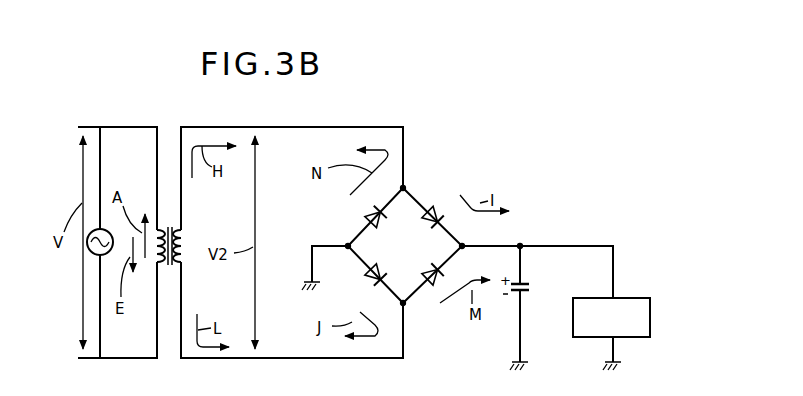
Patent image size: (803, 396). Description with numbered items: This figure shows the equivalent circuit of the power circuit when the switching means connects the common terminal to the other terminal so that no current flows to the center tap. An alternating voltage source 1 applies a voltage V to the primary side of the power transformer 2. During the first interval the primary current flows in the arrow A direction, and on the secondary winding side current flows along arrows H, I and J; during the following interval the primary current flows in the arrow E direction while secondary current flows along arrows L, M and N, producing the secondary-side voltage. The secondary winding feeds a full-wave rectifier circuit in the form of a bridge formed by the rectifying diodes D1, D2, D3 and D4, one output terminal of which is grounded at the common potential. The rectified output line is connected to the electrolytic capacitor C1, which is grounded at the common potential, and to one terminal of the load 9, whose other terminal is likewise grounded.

The AC voltage source 1 is at (110, 234).
The power transformer 2 is at (170, 284).
The load 9 is at (585, 304).
The rectifying diode D1 is at (362, 216).
The rectifying diode D2 is at (370, 268).
The rectifying diode D3 is at (428, 208).
The rectifying diode D4 is at (433, 285).
The electrolytic capacitor C1 is at (523, 290).